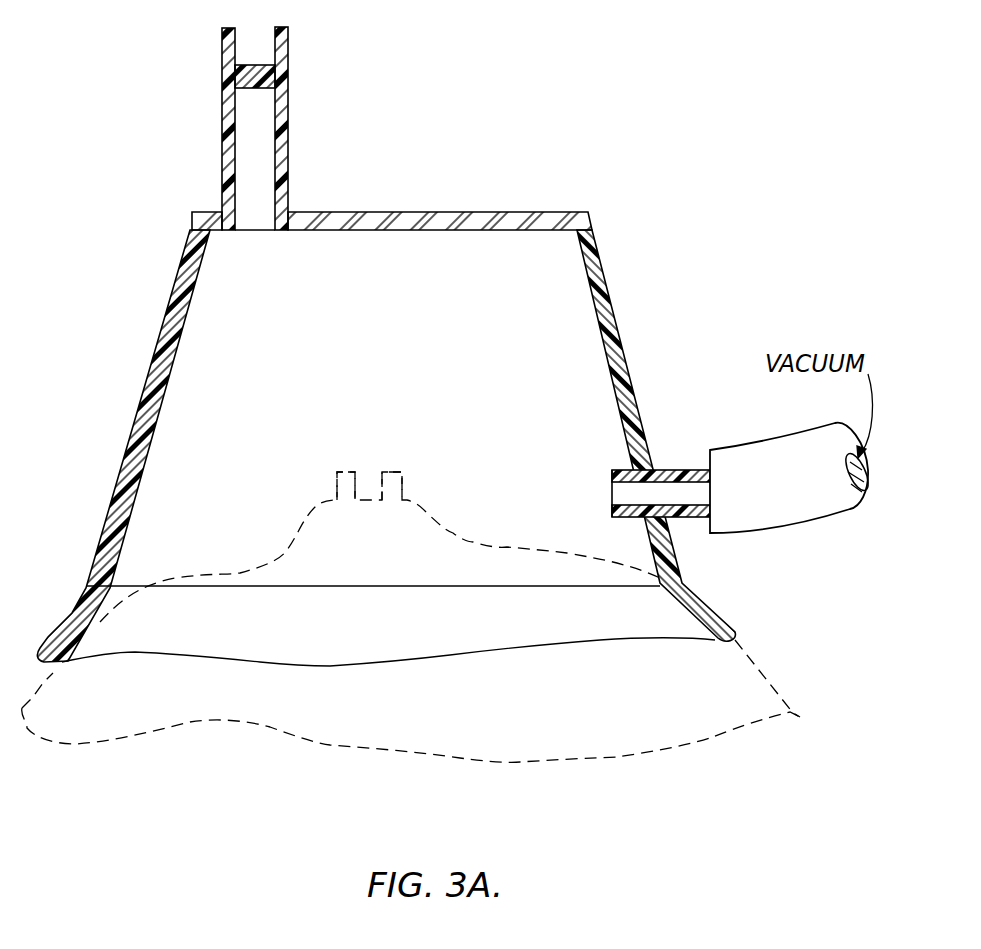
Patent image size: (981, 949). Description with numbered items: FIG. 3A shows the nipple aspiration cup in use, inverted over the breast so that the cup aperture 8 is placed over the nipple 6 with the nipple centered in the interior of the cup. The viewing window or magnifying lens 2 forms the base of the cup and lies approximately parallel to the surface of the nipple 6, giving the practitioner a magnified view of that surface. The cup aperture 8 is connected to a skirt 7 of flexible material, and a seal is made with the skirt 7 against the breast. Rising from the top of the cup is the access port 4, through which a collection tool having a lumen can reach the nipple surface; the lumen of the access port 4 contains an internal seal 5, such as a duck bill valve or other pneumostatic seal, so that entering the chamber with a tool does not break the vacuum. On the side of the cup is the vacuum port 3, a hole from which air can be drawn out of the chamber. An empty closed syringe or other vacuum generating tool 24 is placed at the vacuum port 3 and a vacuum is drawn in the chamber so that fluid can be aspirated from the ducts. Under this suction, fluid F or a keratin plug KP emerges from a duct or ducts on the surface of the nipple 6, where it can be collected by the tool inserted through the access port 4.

The magnifying lens 2 is at (452, 212).
The vacuum port 3 is at (683, 475).
The access port 4 is at (290, 130).
The internal seal 5 is at (243, 77).
The nipple 6 is at (456, 536).
The skirt 7 is at (703, 604).
The cup aperture 8 is at (88, 586).
The vacuum generating tool 24 is at (810, 508).
The fluid F is at (348, 472).
The keratin plug KP is at (400, 472).